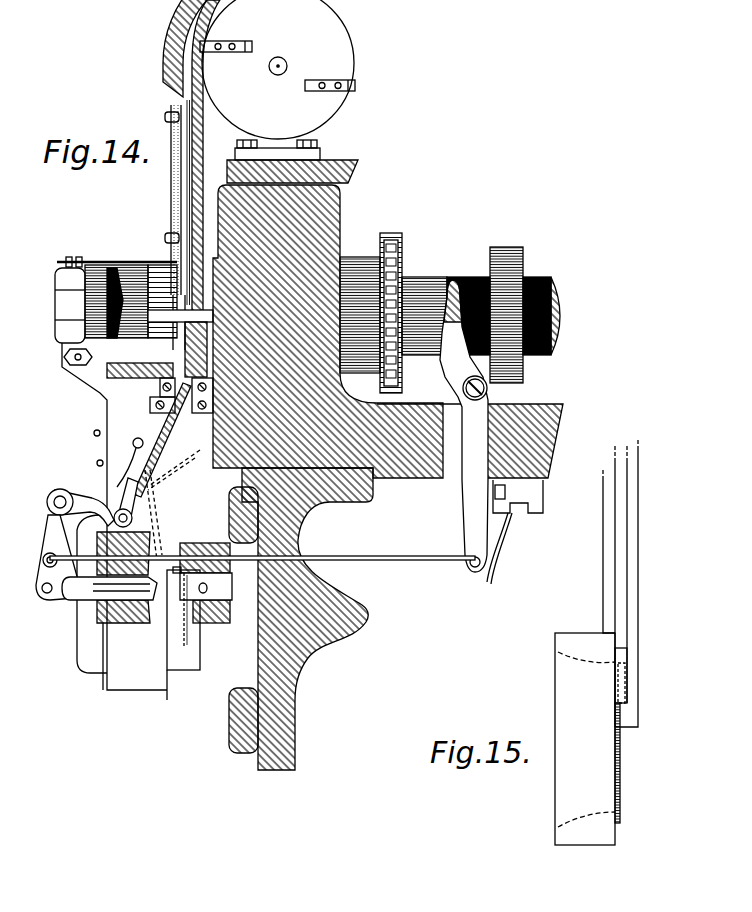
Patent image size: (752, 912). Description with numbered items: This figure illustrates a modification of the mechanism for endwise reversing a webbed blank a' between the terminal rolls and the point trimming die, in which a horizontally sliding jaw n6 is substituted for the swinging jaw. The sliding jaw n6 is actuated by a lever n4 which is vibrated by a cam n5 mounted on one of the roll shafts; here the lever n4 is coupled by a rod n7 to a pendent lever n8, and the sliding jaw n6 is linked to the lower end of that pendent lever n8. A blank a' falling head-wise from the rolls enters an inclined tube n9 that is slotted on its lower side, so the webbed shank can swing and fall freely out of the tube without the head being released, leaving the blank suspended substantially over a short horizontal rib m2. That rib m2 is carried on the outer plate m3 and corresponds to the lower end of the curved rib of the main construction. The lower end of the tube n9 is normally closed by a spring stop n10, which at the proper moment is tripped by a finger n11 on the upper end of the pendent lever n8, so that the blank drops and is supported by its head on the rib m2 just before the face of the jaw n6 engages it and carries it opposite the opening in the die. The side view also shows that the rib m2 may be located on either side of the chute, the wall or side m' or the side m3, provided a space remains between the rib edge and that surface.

In FIG. 14, the lever n4 is at (464, 426).
In FIG. 14, the cam n5 is at (487, 310).
In FIG. 14, the sliding jaw n6 is at (88, 595).
In FIG. 14, the rod n7 is at (371, 558).
In FIG. 14, the pendent lever n8 is at (53, 542).
In FIG. 14, the inclined tube n9 is at (167, 442).
In FIG. 14, the spring stop n10 is at (133, 505).
In FIG. 14, the finger n11 is at (88, 498).
In FIG. 15, the wall or side m' is at (591, 556).
In FIG. 15, the short horizontal rib m2 is at (623, 678).
In FIG. 15, the outer plate m3 is at (633, 616).
In FIG. 15, the webbed blank a' is at (600, 739).